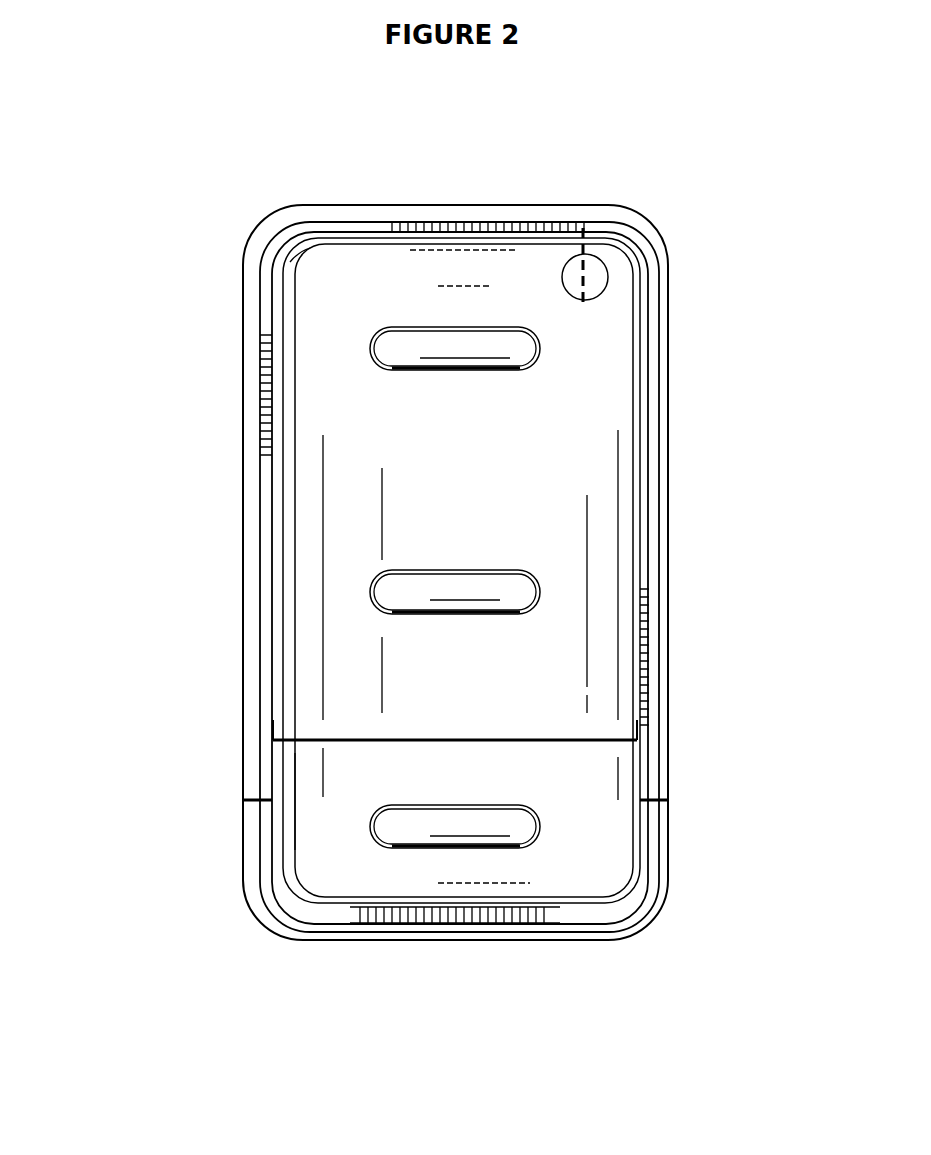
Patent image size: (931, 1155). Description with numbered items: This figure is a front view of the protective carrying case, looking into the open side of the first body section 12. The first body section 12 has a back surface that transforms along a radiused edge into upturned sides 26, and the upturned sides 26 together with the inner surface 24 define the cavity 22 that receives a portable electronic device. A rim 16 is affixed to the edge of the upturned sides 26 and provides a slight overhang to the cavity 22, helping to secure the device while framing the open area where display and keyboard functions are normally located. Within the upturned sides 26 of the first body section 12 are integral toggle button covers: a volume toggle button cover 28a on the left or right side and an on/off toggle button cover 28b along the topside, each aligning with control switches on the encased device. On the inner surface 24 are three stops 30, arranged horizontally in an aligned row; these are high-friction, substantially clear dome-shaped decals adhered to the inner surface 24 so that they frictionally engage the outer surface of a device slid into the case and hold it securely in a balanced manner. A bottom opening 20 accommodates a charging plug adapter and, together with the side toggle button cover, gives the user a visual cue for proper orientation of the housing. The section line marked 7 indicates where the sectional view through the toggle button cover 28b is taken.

The section line 7- 7 is at (695, 317).
The first body section 12 is at (252, 565).
The rim 16 is at (642, 397).
The bottom opening 20 is at (457, 935).
The cavity 22 is at (520, 512).
The inner surface 24 is at (550, 675).
The upturned sides 26 is at (243, 827).
The volume toggle button cover 28a is at (240, 455).
The on/off toggle button cover 28b is at (557, 212).
The stops 30 is at (450, 353).